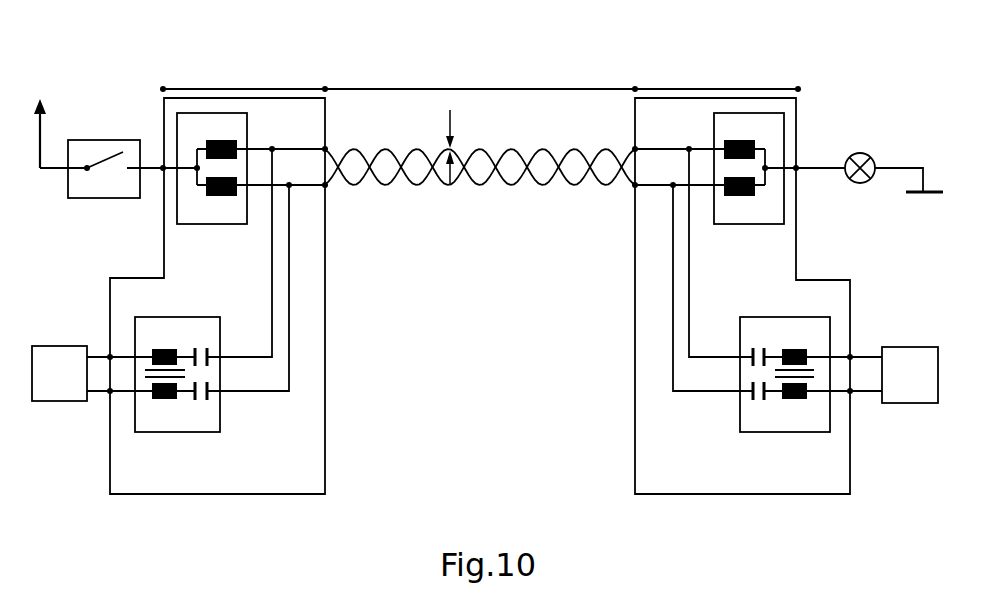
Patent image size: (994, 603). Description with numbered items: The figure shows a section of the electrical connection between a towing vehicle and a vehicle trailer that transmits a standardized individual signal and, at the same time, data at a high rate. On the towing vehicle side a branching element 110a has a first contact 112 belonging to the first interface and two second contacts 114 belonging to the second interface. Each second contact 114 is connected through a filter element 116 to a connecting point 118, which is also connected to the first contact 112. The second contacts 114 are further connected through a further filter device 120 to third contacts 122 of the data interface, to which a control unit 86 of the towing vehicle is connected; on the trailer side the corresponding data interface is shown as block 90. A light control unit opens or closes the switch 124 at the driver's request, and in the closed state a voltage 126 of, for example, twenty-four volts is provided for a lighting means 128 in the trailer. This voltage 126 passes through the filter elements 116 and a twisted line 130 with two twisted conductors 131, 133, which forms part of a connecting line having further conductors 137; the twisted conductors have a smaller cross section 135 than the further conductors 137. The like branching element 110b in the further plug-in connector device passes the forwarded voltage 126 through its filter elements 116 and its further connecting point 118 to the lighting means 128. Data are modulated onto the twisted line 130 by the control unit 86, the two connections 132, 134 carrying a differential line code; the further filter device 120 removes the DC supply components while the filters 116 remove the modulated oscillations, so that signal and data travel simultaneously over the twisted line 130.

The control unit 86 is at (46, 386).
The second electronic device 90 is at (897, 387).
The branching element 110a is at (208, 98).
The branching element 110b is at (767, 98).
The first contact 112 is at (163, 88).
The second contacts 114 is at (360, 78).
The filter element 116 is at (227, 140).
The connecting point 118 is at (195, 168).
The further filter device 120 is at (187, 432).
The third contacts 122 is at (110, 357).
The switch 124 is at (110, 140).
The voltage 126 is at (53, 103).
The lighting means 128 is at (877, 160).
The twisted line 130 is at (480, 165).
The twisted conductor 131 is at (388, 149).
The connection 132 is at (272, 330).
The twisted conductor 133 is at (385, 185).
The connection 134 is at (289, 391).
The cross section 135 is at (455, 118).
The further conductors 137 is at (530, 89).